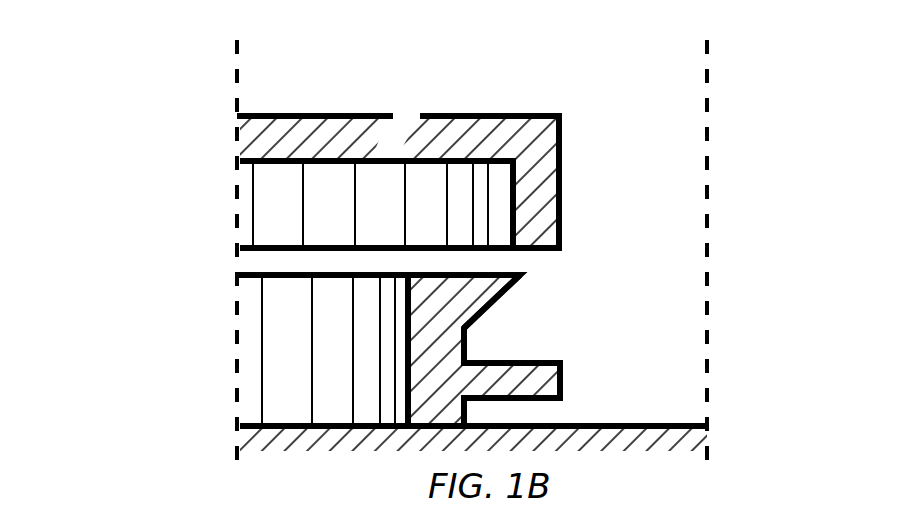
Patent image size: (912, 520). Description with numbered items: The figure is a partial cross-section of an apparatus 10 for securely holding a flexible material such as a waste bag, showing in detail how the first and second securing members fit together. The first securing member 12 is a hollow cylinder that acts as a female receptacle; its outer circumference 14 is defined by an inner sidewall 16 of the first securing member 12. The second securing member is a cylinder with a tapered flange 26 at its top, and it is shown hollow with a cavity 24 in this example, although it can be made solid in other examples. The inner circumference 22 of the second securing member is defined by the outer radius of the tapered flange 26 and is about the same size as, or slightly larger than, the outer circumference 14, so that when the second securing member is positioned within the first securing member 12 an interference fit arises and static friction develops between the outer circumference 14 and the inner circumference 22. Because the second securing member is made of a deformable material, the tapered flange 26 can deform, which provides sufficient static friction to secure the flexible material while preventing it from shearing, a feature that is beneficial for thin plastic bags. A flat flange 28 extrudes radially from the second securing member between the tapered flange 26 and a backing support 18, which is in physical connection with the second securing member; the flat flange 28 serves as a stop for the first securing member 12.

The apparatus 10 is at (82, 270).
The first securing member 12 is at (397, 156).
The outer circumference 14 is at (519, 206).
The inner sidewall 16 is at (367, 213).
The backing support 18 is at (603, 423).
The inner circumference 22 is at (523, 273).
The cavity 24 is at (461, 345).
The tapered flange 26 is at (495, 303).
The flat flange 28 is at (563, 377).